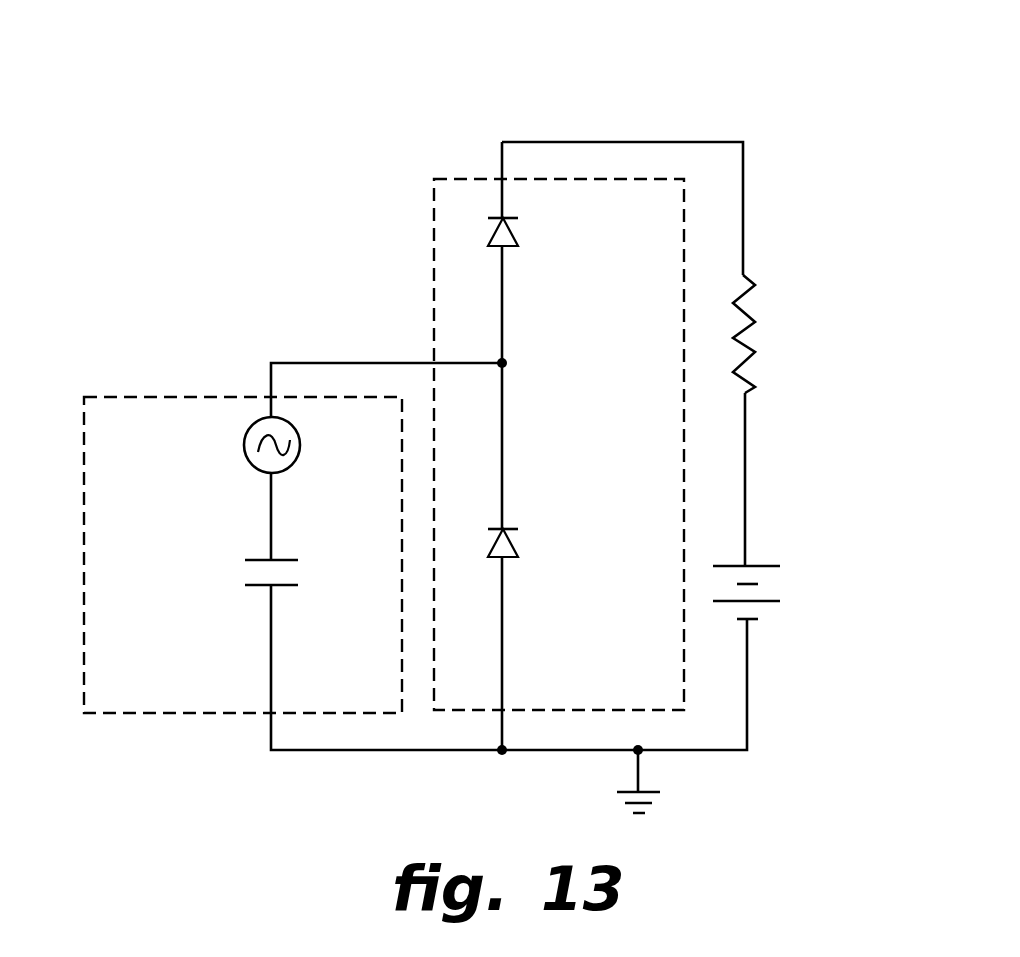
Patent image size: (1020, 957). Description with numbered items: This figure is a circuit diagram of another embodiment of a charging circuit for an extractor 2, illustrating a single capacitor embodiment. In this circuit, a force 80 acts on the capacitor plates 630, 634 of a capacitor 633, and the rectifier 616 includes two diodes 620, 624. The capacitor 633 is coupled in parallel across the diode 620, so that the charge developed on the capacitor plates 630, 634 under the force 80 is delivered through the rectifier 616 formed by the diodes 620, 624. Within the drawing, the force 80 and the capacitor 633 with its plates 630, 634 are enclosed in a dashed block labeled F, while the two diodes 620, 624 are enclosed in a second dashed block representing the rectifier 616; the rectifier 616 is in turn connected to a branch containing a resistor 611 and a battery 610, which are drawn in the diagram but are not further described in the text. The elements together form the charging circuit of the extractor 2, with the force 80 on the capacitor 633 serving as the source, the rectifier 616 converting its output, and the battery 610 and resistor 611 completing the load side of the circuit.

The extractor 2 is at (648, 116).
The diode 624 is at (518, 240).
The diode 620 is at (520, 552).
The rectifier 616 is at (620, 671).
The resistor 611 is at (750, 341).
The battery 610 is at (763, 566).
The AC source and capacitor block F is at (110, 382).
The force 80 is at (245, 452).
The capacitor 633 is at (248, 607).
The capacitor plate 630 is at (290, 560).
The capacitor plate 634 is at (288, 585).